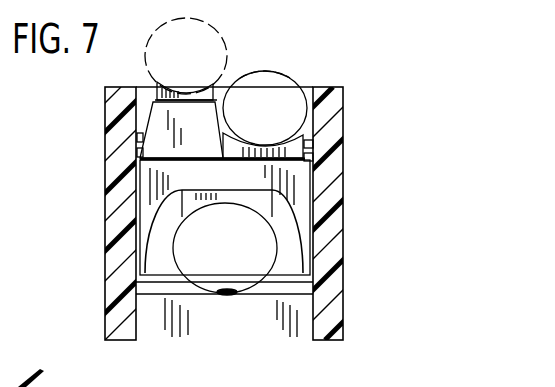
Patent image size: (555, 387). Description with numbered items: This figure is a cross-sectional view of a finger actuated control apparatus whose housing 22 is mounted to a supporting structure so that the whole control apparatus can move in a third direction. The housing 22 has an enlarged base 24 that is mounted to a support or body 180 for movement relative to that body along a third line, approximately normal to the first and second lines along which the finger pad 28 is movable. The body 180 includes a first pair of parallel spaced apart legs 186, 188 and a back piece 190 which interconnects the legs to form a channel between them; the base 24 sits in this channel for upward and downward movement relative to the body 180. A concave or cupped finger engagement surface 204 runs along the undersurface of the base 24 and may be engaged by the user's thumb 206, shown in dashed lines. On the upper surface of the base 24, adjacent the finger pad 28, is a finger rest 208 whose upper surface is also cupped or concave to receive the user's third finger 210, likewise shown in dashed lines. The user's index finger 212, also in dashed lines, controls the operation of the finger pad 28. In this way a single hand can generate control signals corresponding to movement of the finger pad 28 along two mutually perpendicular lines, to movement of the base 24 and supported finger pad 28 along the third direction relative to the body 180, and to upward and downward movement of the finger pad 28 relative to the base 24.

The body 180 is at (98, 208).
The leg 186 is at (104, 274).
The leg 188 is at (334, 307).
The back piece 190 is at (265, 328).
The housing 22 is at (160, 132).
The base 24 is at (295, 178).
The finger pad 28 is at (219, 92).
The finger engagement surface 204 is at (218, 207).
The thumb 206 is at (227, 297).
The finger rest 208 is at (284, 125).
The third finger 210 is at (288, 73).
The index finger 212 is at (218, 31).